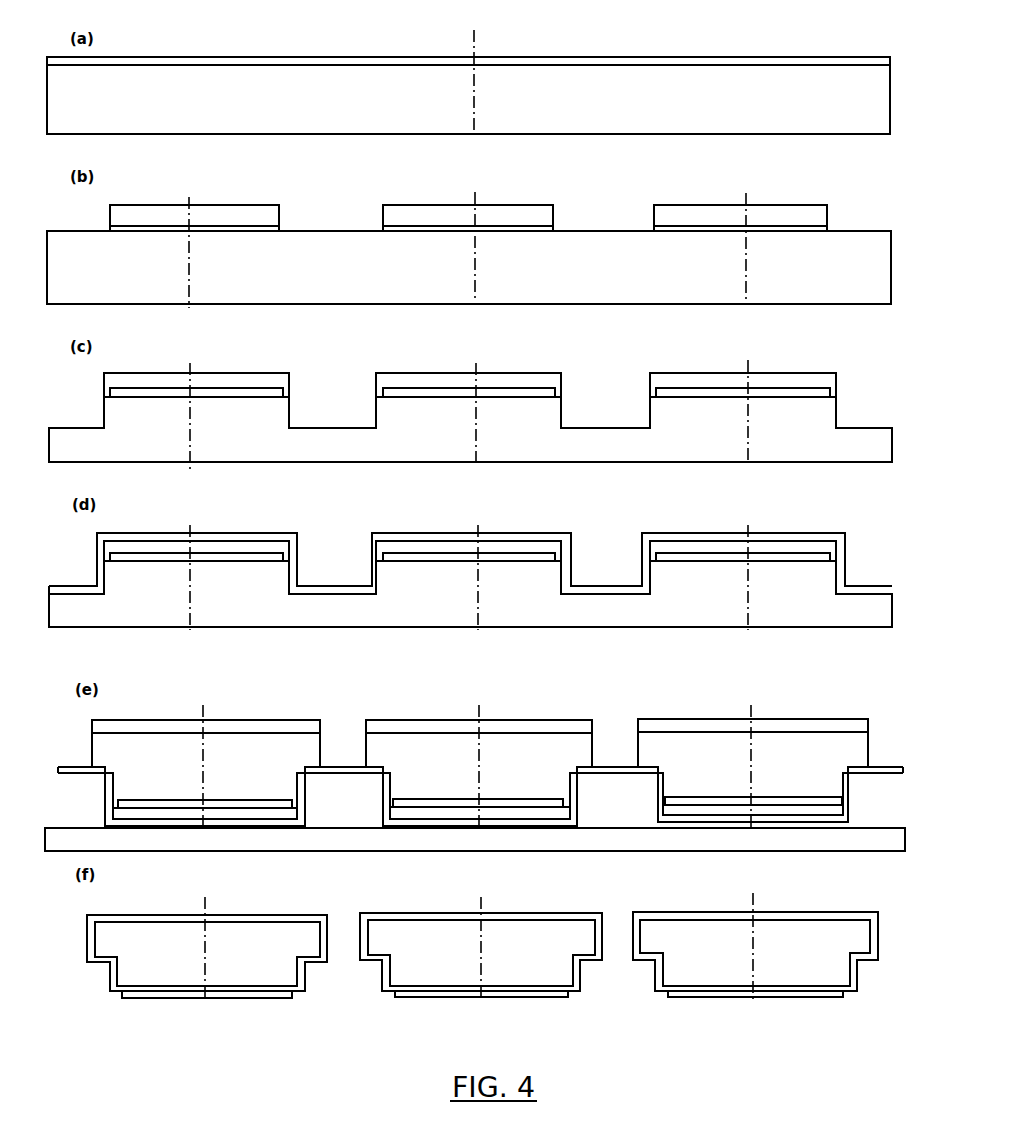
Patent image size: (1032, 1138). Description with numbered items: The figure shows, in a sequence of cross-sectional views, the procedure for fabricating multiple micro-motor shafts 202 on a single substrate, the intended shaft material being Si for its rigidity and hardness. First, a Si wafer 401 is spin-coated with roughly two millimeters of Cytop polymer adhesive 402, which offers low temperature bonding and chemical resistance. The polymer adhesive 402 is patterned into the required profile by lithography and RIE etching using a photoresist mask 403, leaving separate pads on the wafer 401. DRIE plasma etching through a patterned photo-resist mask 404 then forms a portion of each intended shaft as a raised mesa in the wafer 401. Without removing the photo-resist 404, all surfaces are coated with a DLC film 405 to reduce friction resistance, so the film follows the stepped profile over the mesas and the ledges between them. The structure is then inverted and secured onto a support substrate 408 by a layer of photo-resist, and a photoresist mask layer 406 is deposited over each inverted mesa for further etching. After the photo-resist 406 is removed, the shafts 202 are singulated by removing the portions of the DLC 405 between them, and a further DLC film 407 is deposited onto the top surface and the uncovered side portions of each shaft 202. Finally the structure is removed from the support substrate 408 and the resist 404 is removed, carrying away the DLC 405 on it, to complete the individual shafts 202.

The shaft 202 is at (482, 970).
The Si wafer 401 is at (333, 83).
The Cytop polymer adhesive 402 is at (497, 57).
The photoresist mask 403 is at (442, 216).
The patterned photo-resist mask 404 is at (421, 383).
The DLC film 405 is at (397, 540).
The photoresist mask layer 406 is at (433, 728).
The DLC film 407 is at (438, 918).
The support substrate 408 is at (103, 842).